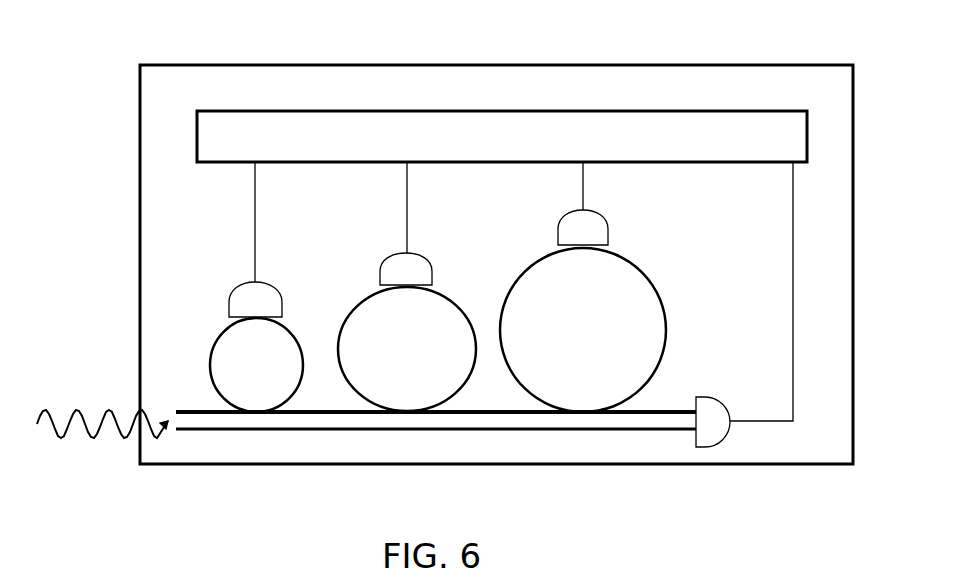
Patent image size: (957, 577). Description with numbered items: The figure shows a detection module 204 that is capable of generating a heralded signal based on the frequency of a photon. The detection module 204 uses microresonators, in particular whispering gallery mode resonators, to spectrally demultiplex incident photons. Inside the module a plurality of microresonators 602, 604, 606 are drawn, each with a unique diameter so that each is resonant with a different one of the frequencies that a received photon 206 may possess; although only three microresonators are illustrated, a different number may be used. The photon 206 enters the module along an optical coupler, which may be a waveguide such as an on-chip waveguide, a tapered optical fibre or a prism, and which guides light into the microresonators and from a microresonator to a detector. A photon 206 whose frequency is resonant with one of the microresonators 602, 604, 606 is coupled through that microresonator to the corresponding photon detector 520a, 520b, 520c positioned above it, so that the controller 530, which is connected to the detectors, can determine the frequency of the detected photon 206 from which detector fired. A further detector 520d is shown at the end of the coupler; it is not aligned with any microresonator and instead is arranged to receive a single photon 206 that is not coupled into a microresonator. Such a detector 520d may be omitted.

The detection module 204 is at (140, 142).
The photon 206 is at (102, 406).
The controller 530 is at (582, 150).
The photon detector 520a is at (237, 239).
The photon detector 520b is at (385, 223).
The photon detector 520c is at (563, 203).
The detector 520d is at (735, 304).
The microresonator 602 is at (256, 365).
The microresonator 604 is at (407, 349).
The microresonator 606 is at (583, 330).